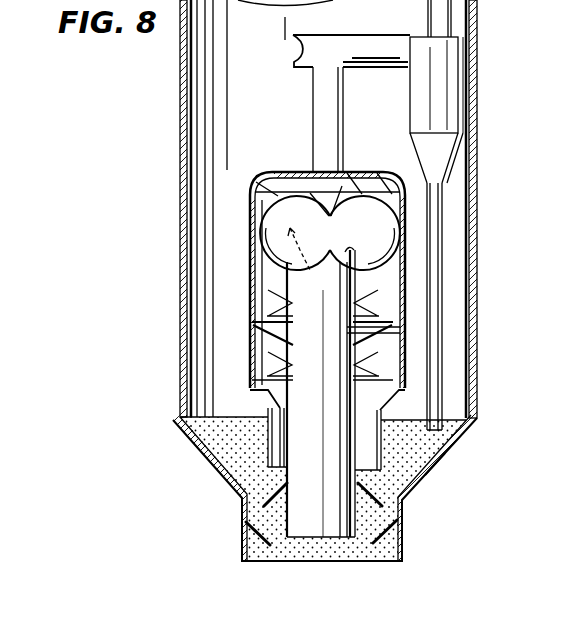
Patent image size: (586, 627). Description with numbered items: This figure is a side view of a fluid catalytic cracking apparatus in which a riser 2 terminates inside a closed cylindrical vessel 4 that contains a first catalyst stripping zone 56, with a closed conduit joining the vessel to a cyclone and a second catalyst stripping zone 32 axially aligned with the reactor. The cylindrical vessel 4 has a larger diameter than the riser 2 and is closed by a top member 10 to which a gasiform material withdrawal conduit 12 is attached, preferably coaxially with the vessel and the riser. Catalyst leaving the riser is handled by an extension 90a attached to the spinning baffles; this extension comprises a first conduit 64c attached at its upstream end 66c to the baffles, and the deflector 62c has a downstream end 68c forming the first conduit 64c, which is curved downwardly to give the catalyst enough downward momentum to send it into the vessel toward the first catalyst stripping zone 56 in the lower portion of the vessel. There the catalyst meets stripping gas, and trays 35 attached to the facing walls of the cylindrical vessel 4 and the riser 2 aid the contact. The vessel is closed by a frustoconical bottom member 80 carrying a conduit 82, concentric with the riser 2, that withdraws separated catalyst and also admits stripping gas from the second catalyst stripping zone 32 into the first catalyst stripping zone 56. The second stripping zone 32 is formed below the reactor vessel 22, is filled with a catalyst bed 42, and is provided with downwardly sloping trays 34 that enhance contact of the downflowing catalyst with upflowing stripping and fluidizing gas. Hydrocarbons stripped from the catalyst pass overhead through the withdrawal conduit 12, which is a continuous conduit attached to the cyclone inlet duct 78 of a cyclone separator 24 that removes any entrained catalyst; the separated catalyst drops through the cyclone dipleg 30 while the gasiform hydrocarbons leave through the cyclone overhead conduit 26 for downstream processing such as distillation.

The riser 2 is at (306, 545).
The cylindrical vessel 4 is at (252, 302).
The top member 10 is at (301, 137).
The gasiform material withdrawal conduit 12 is at (318, 114).
The reactor vessel 22 is at (180, 114).
The cyclone separator 24 is at (464, 116).
The cyclone overhead conduit 26 is at (428, 12).
The cyclone dipleg 30 is at (441, 358).
The second catalyst stripping zone 32 is at (242, 548).
The downwardly sloping trays 34 is at (412, 524).
The trays 35 is at (358, 326).
The catalyst bed 42 is at (430, 474).
The first catalyst stripping zone 56 is at (276, 350).
The deflector 62c is at (262, 266).
The first conduit 64c is at (262, 226).
The upstream end 66c is at (338, 190).
The downstream end 68c is at (298, 268).
The cyclone inlet duct 78 is at (373, 52).
The frustoconical bottom member 80 is at (266, 406).
The conduit for withdrawing particles of separated catalyst 82 is at (268, 437).
The extension 90a is at (266, 178).